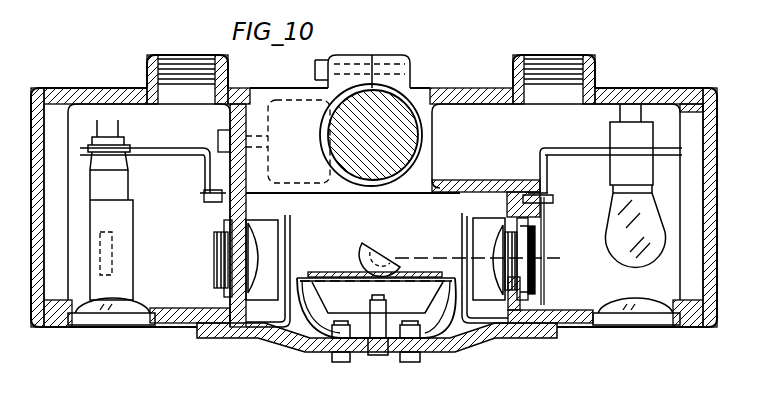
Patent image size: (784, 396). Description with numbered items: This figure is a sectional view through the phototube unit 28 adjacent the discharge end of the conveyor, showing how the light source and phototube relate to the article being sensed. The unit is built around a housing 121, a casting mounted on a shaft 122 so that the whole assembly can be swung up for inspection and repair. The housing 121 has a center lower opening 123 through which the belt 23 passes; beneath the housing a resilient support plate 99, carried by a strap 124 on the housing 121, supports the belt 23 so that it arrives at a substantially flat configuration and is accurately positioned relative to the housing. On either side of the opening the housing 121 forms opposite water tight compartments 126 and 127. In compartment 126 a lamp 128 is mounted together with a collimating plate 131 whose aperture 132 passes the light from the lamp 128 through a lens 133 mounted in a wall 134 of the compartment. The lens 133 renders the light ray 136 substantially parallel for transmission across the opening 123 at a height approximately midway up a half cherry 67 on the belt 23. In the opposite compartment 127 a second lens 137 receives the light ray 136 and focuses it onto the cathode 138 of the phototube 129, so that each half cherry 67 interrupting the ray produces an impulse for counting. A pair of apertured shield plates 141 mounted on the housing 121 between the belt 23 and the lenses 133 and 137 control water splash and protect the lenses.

The housing 121 is at (660, 88).
The phototube unit 28 is at (612, 86).
The shaft 122 is at (393, 115).
The compartment 127 is at (186, 143).
The compartment 126 is at (549, 143).
The lamp 128 is at (622, 210).
The phototube 129 is at (128, 281).
The cathode 138 is at (112, 248).
The second lens 137 is at (258, 242).
The apertured shield plates 141 is at (291, 238).
The center lower opening 123 is at (446, 234).
The half cherry 67 is at (363, 252).
The light ray 136 is at (430, 243).
The conveyor belt 23 is at (343, 272).
The resilient support plate 99 is at (428, 323).
The strap 124 is at (268, 340).
The lens 133 is at (486, 230).
The wall 134 is at (520, 216).
The aperture 132 is at (545, 258).
The collimating plate 131 is at (545, 277).